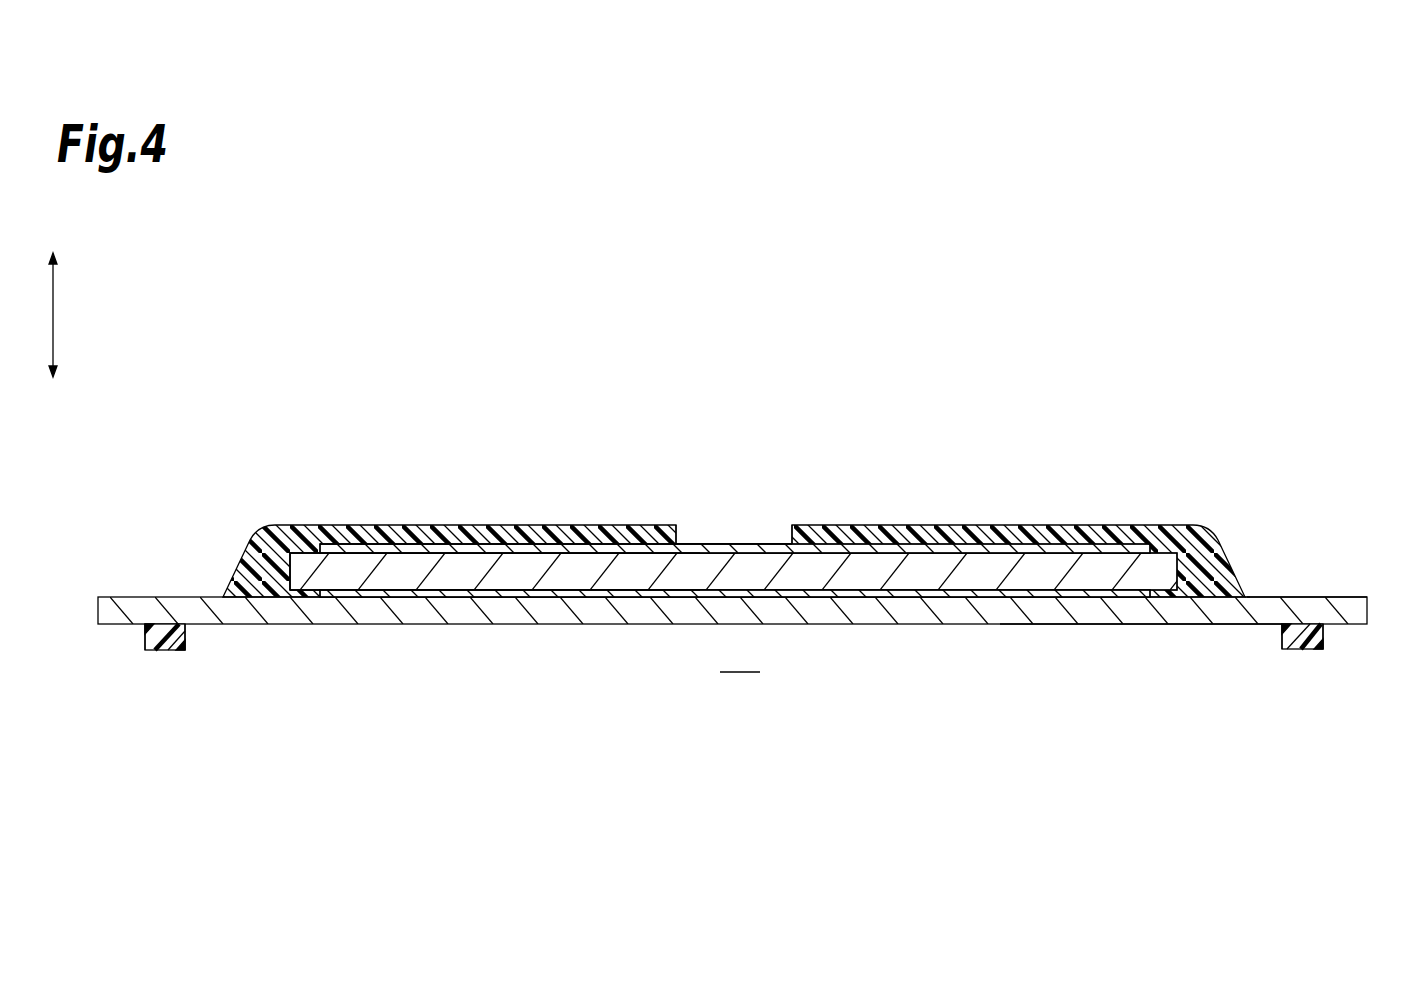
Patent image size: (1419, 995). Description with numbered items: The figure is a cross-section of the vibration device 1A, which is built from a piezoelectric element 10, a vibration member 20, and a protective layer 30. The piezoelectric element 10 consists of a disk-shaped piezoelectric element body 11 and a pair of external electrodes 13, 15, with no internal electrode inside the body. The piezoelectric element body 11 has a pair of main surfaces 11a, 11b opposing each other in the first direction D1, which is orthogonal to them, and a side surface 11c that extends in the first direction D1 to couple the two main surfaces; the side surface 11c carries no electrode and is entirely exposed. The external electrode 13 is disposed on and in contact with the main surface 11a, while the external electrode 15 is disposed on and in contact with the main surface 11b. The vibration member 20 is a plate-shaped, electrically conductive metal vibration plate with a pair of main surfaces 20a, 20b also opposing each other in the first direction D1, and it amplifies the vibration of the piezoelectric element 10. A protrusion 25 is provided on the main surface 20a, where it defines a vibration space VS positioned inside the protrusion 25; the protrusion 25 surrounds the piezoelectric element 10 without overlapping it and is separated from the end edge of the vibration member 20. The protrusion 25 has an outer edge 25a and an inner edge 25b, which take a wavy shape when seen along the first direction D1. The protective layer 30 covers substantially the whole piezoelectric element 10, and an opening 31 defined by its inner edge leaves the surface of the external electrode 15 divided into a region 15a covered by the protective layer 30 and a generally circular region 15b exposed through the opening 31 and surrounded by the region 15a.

The vibration device 1A is at (1151, 422).
The first direction D1 is at (53, 323).
The piezoelectric element 10 is at (733, 499).
The piezoelectric element body 11 is at (1032, 562).
The main surface 11a is at (473, 590).
The main surface 11b is at (472, 546).
The side surface 11c is at (290, 587).
The external electrode 13 is at (1092, 592).
The external electrode 15 is at (950, 545).
The region covered with the protective layer 15a is at (349, 544).
The region exposed from the protective layer 15b is at (707, 543).
The vibration member 20 is at (1333, 610).
The main surface 20a is at (1123, 626).
The main surface 20b is at (1288, 596).
The protrusion 25 is at (164, 650).
The outer edge 25a is at (138, 635).
The inner edge 25b is at (188, 648).
The protective layer 30 is at (537, 544).
The opening 31 is at (790, 540).
The vibration space VS is at (740, 655).